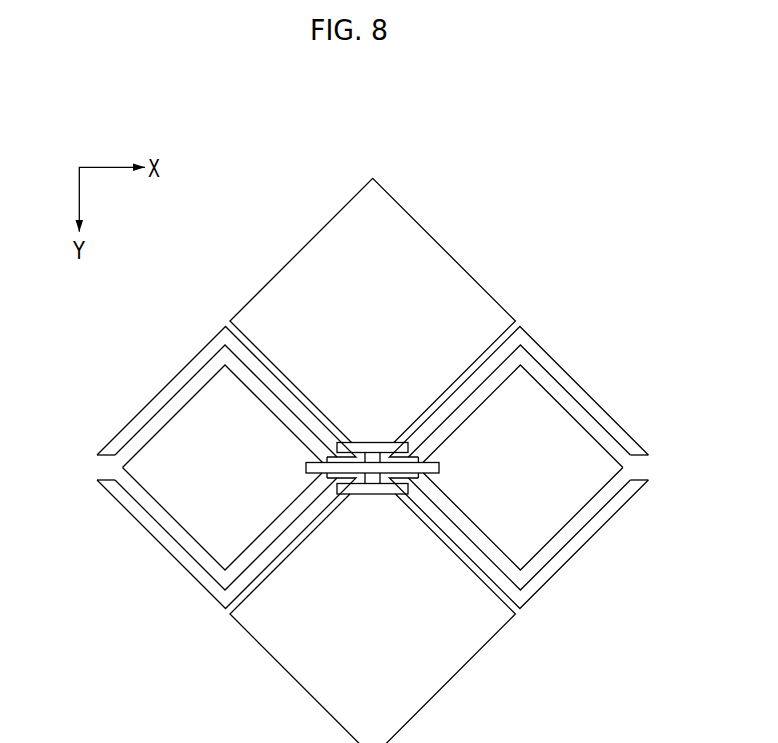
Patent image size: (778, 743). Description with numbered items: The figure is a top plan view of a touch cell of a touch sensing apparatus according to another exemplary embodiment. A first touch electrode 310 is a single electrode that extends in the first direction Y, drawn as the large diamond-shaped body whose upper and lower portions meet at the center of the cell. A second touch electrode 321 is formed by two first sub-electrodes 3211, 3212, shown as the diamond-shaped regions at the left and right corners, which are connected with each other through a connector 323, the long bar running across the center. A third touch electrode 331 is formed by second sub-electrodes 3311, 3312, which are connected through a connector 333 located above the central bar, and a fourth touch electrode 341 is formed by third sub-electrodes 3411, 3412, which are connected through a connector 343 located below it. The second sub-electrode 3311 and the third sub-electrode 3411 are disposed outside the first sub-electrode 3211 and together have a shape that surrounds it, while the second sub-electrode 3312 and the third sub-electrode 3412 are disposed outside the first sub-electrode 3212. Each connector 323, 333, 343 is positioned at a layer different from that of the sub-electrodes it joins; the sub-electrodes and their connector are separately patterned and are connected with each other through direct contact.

The first touch electrode 310 is at (437, 245).
The second touch electrode 321 is at (223, 437).
The first sub-electrode 3211 is at (203, 370).
The first sub-electrode 3212 is at (523, 467).
The connector 323 is at (418, 462).
The third touch electrode 331 is at (361, 390).
The second sub-electrode 3311 is at (121, 428).
The second sub-electrode 3312 is at (585, 390).
The connector 333 is at (367, 443).
The fourth touch electrode 341 is at (345, 541).
The third sub-electrode 3411 is at (157, 542).
The third sub-electrode 3412 is at (587, 547).
The connector 343 is at (372, 494).